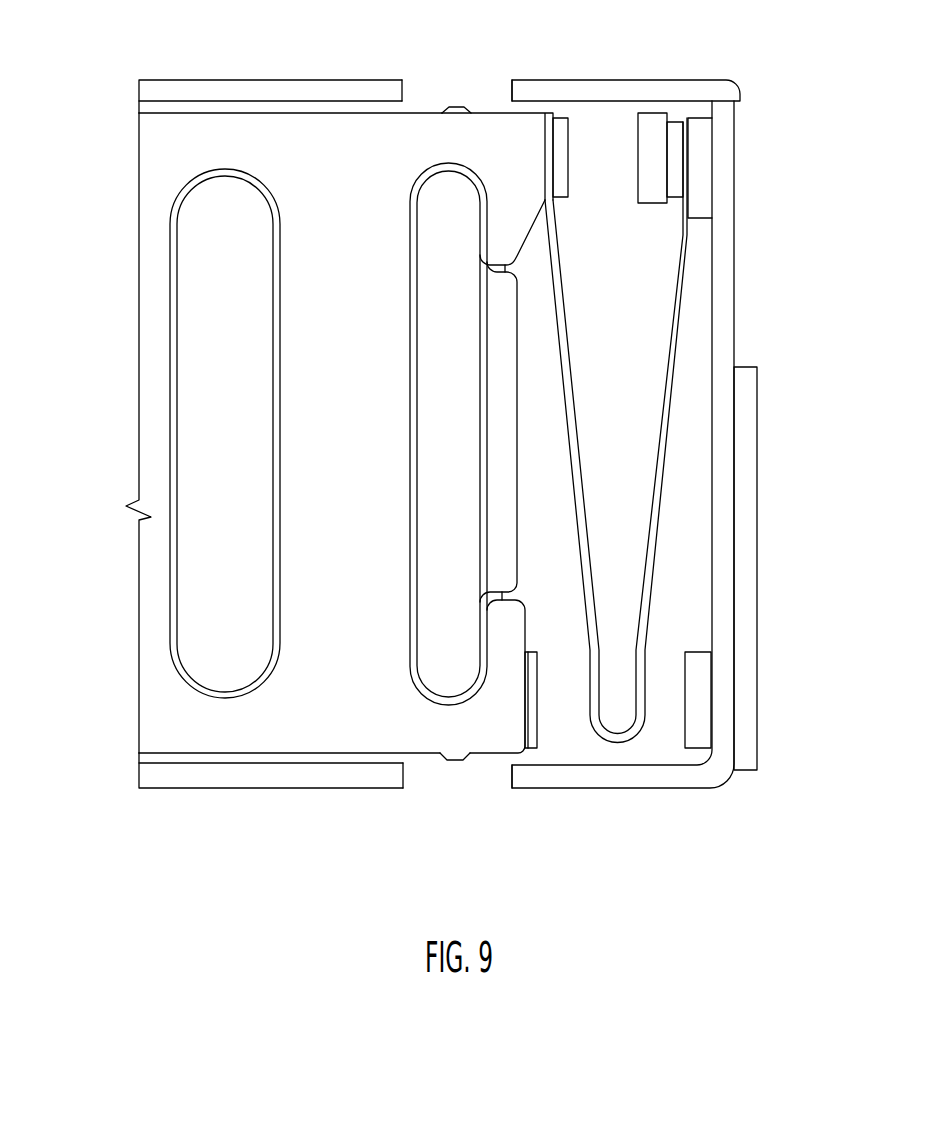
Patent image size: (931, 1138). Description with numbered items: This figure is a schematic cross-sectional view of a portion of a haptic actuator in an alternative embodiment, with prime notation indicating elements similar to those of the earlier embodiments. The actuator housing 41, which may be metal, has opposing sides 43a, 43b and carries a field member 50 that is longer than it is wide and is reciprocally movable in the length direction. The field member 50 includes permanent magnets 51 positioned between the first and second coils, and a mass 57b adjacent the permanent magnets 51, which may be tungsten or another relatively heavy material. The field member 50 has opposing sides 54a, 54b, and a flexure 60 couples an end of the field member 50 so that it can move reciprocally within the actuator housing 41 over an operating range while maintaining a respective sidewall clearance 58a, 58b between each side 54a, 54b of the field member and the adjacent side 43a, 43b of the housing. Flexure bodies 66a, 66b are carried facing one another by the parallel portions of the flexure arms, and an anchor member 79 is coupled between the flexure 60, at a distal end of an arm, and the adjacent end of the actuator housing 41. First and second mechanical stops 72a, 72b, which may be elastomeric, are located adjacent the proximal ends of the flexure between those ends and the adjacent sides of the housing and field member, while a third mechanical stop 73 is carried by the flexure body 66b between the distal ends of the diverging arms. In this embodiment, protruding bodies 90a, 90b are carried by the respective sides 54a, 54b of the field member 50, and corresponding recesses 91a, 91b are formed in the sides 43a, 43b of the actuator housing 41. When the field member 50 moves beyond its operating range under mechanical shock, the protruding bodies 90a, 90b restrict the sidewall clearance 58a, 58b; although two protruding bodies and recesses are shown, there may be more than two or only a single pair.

The actuator housing 41 is at (757, 539).
The side of actuator housing 43a is at (355, 80).
The side of actuator housing 43b is at (203, 790).
The field member 50 is at (139, 353).
The permanent magnets 51 is at (203, 430).
The side of field member 54a is at (165, 113).
The side of field member 54b is at (190, 755).
The mass 57b is at (430, 215).
The sidewall clearance 58a is at (225, 108).
The sidewall clearance 58b is at (345, 764).
The flexure 60 is at (676, 363).
The flexure body 66a is at (560, 150).
The flexure body 66b is at (675, 118).
The first mechanical stop 72a is at (540, 722).
The second mechanical stop 72b is at (697, 752).
The third mechanical stop 73 is at (650, 205).
The anchor member 79 is at (700, 158).
The protruding body 90a is at (455, 107).
The protruding body 90b is at (458, 762).
The recess 91a is at (485, 80).
The recess 91b is at (435, 773).